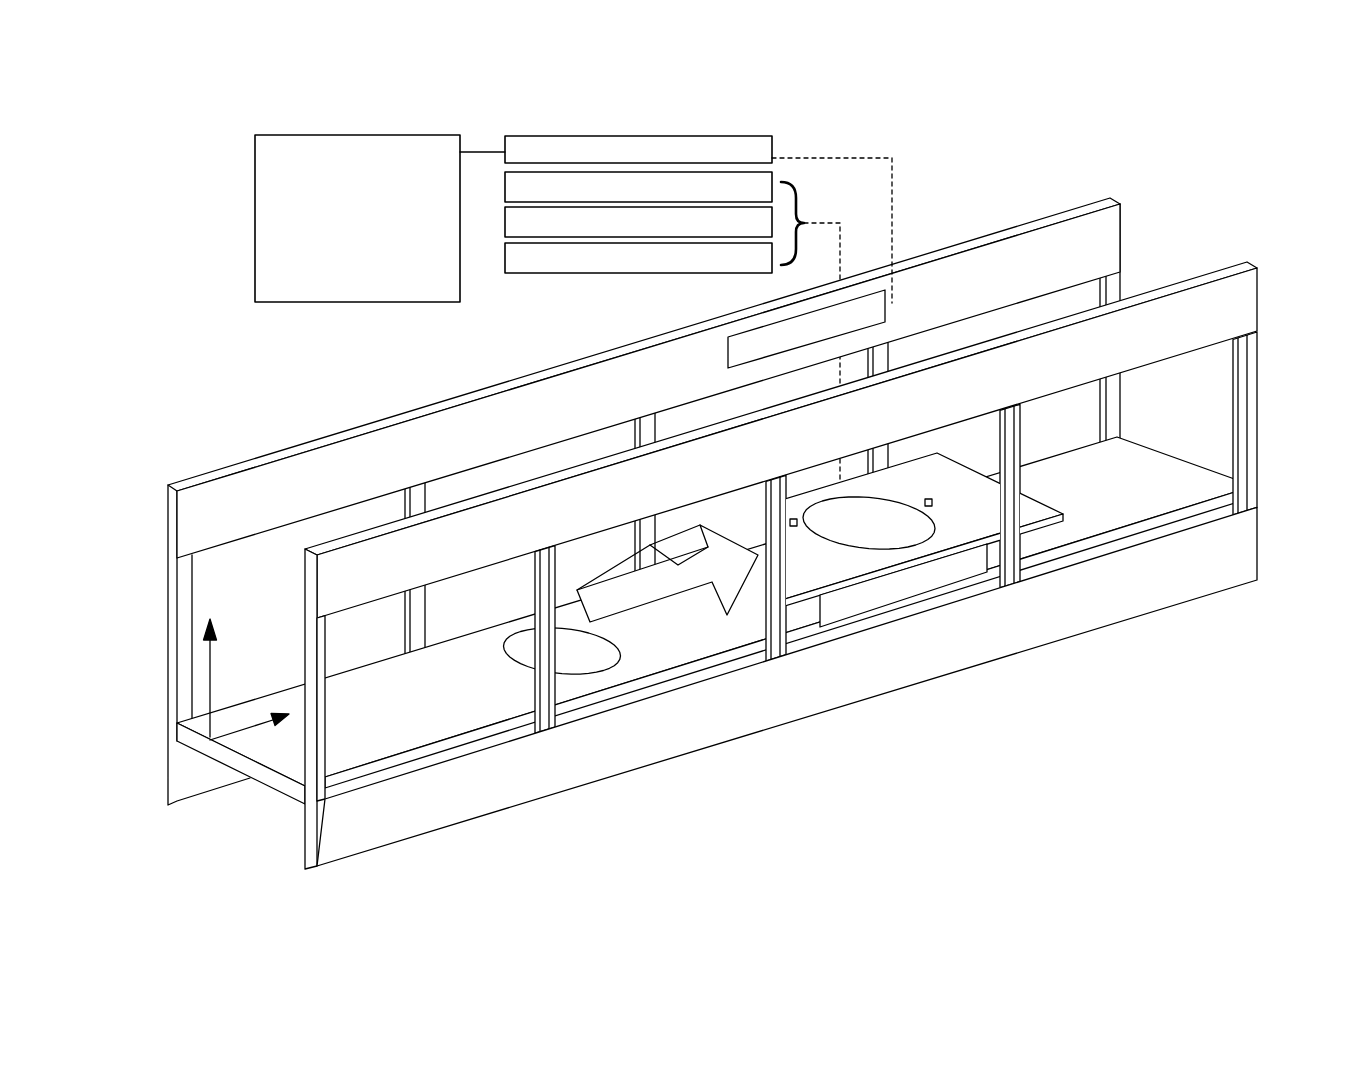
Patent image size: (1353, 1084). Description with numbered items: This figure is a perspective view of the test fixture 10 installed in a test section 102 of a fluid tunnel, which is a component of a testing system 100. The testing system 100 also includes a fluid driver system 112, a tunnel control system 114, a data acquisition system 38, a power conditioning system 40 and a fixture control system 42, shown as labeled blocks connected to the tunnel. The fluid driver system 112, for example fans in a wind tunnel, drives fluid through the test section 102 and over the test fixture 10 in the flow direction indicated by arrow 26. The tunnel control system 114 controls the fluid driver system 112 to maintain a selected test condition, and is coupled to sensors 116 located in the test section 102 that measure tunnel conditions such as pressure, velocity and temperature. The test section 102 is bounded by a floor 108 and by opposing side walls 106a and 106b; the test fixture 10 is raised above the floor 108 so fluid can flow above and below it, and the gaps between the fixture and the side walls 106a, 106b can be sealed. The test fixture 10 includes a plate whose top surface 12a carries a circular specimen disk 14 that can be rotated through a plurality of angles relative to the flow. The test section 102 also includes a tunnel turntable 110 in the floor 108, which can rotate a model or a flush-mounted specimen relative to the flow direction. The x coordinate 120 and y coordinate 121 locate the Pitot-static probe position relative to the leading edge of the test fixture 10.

The testing system 100 is at (252, 110).
The test section 102 is at (388, 386).
The fluid driver system 112 is at (342, 268).
The tunnel control system 114 is at (753, 162).
The data acquisition system 38 is at (690, 198).
The power conditioning system 40 is at (718, 234).
The fixture control system 42 is at (743, 268).
The sensors 116 is at (862, 340).
The side wall 106a is at (1130, 376).
The side wall 106b is at (1057, 292).
The floor 108 is at (423, 726).
The tunnel turntable 110 is at (592, 660).
The test fixture 10 is at (958, 592).
The top surface 12a is at (826, 572).
The circular specimen disk 14 is at (859, 534).
The arrow 26 is at (731, 596).
The x coordinate 120 is at (252, 733).
The y coordinate 121 is at (230, 669).